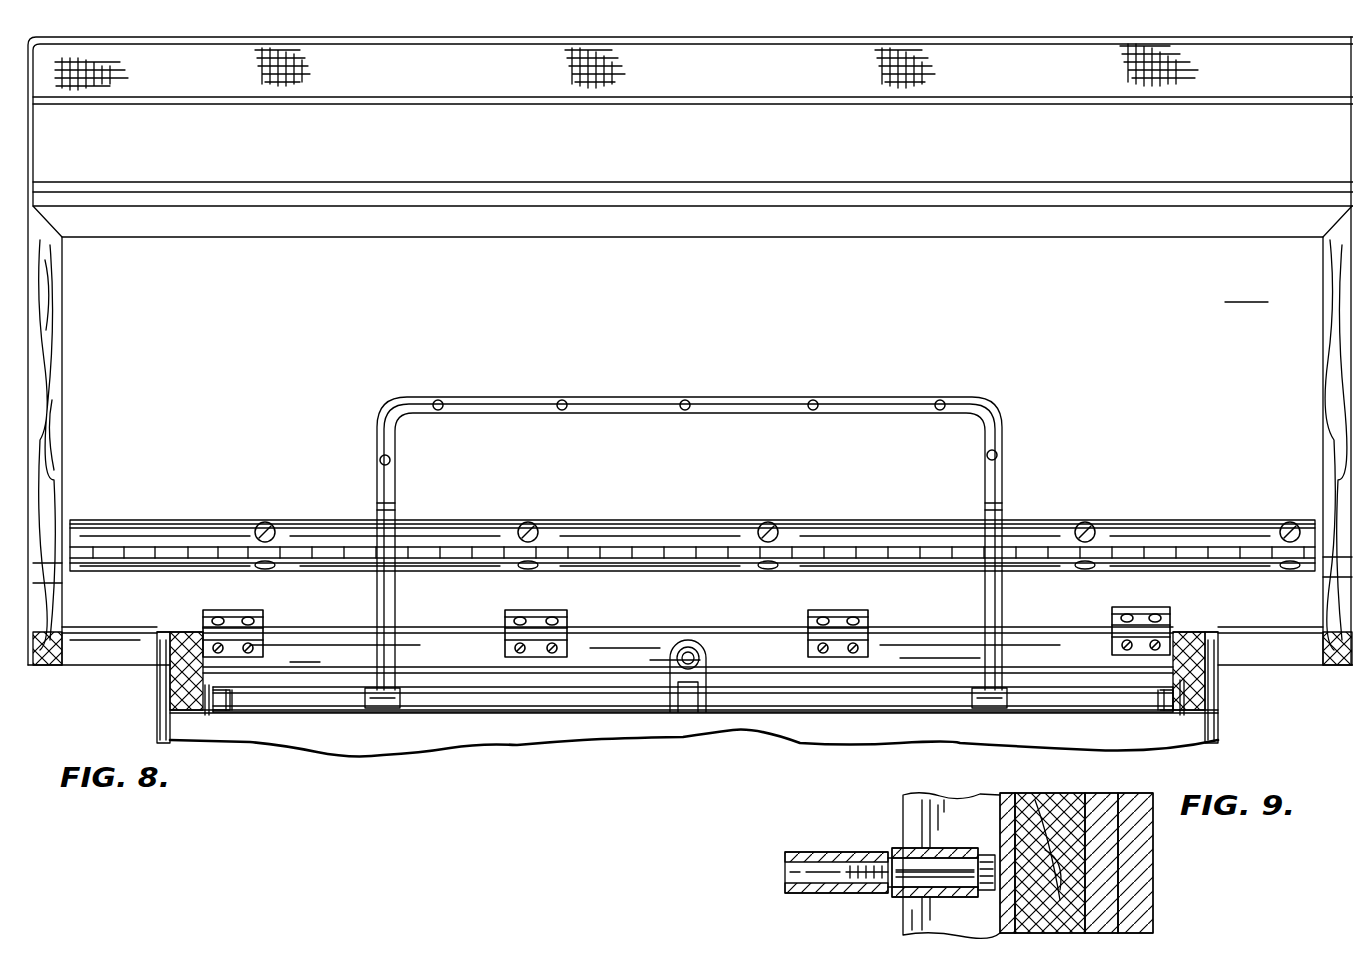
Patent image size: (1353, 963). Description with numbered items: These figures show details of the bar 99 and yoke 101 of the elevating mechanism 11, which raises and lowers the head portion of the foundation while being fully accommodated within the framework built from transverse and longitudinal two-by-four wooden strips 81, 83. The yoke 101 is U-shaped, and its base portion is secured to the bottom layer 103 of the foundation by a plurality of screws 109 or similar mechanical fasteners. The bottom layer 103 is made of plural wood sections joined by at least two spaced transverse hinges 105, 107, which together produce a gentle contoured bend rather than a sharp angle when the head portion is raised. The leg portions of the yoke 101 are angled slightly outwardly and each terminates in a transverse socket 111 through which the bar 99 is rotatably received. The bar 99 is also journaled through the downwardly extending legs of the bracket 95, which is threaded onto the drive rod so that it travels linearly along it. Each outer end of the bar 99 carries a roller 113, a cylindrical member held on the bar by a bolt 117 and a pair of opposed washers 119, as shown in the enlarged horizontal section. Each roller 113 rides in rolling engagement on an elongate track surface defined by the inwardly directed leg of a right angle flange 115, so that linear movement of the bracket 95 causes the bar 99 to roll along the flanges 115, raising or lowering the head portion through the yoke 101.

In FIG. 8, the elevating mechanism 11 is at (1003, 502).
In FIG. 8, the transverse wooden strips 81 is at (452, 665).
In FIG. 8, the longitudinal wooden strips 83 is at (170, 682).
In FIG. 9, the longitudinal wooden strips 83 is at (1076, 863).
In FIG. 8, the bracket 95 is at (708, 658).
In FIG. 8, the elongate bar 99 is at (805, 712).
In FIG. 9, the elongate bar 99 is at (840, 893).
In FIG. 8, the yoke 101 is at (908, 398).
In FIG. 8, the bottom layer 103 is at (690, 351).
In FIG. 8, the transverse hinge 105 is at (1112, 640).
In FIG. 8, the transverse hinge 107 is at (1125, 548).
In FIG. 8, the screws 109 is at (390, 462).
In FIG. 8, the transverse socket 111 is at (392, 710).
In FIG. 8, the roller 113 is at (222, 712).
In FIG. 9, the roller 113 is at (920, 898).
In FIG. 8, the right angle flange 115 is at (212, 716).
In FIG. 9, the right angle flange 115 is at (915, 806).
In FIG. 9, the bolt 117 is at (958, 878).
In FIG. 9, the washers 119 is at (970, 858).